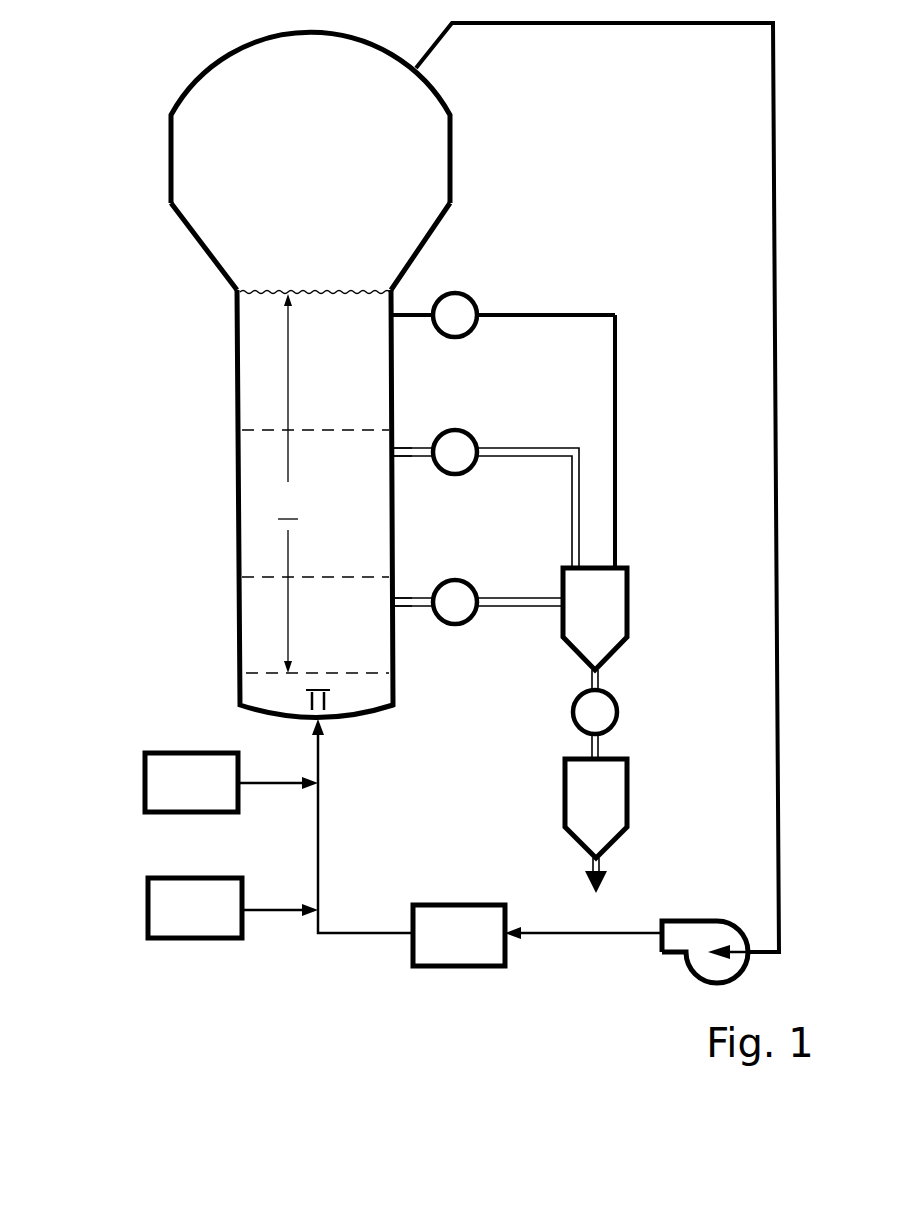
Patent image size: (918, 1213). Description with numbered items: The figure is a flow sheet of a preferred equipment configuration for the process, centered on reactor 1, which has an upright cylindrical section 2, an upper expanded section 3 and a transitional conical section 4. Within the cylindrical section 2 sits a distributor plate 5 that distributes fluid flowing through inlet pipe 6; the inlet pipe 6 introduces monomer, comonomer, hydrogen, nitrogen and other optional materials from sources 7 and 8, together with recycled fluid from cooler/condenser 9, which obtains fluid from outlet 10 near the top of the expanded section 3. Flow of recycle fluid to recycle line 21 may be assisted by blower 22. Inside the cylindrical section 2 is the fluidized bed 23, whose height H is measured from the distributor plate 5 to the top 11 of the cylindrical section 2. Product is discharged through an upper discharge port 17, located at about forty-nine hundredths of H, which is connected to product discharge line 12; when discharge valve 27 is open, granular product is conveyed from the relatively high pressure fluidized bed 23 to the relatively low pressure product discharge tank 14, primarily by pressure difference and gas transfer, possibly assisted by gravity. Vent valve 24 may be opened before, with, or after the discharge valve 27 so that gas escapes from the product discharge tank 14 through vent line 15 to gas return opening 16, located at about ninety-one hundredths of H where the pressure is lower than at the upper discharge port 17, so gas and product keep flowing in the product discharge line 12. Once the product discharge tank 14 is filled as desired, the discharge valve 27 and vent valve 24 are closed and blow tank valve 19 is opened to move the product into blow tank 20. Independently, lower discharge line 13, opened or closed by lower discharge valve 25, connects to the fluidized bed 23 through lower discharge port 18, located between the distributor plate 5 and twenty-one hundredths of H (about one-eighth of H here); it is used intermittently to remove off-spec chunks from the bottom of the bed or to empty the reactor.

The reactor 1 is at (311, 375).
The upright cylindrical section 2 is at (132, 292).
The upper expanded section 3 is at (132, 32).
The transitional conical section 4 is at (132, 203).
The distributor plate 5 is at (266, 676).
The inlet pipe 6 is at (318, 820).
The source 7 is at (176, 798).
The source 8 is at (179, 925).
The cooler/condenser 9 is at (444, 948).
The outlet 10 is at (419, 68).
The top of cylindrical section 11 is at (358, 290).
The product discharge line 12 is at (522, 448).
The lower discharge line 13 is at (536, 608).
The product discharge tank 14 is at (630, 612).
The vent line 15 is at (618, 530).
The gas return opening 16 is at (394, 315).
The upper discharge port 17 is at (392, 452).
The lower discharge port 18 is at (392, 602).
The blow tank valve 19 is at (620, 712).
The blow tank 20 is at (630, 772).
The recycle line 21 is at (777, 902).
The blower 22 is at (695, 974).
The fluidized bed 23 is at (304, 394).
The vent valve 24 is at (470, 330).
The lower discharge valve 25 is at (467, 623).
The discharge valve 27 is at (470, 468).